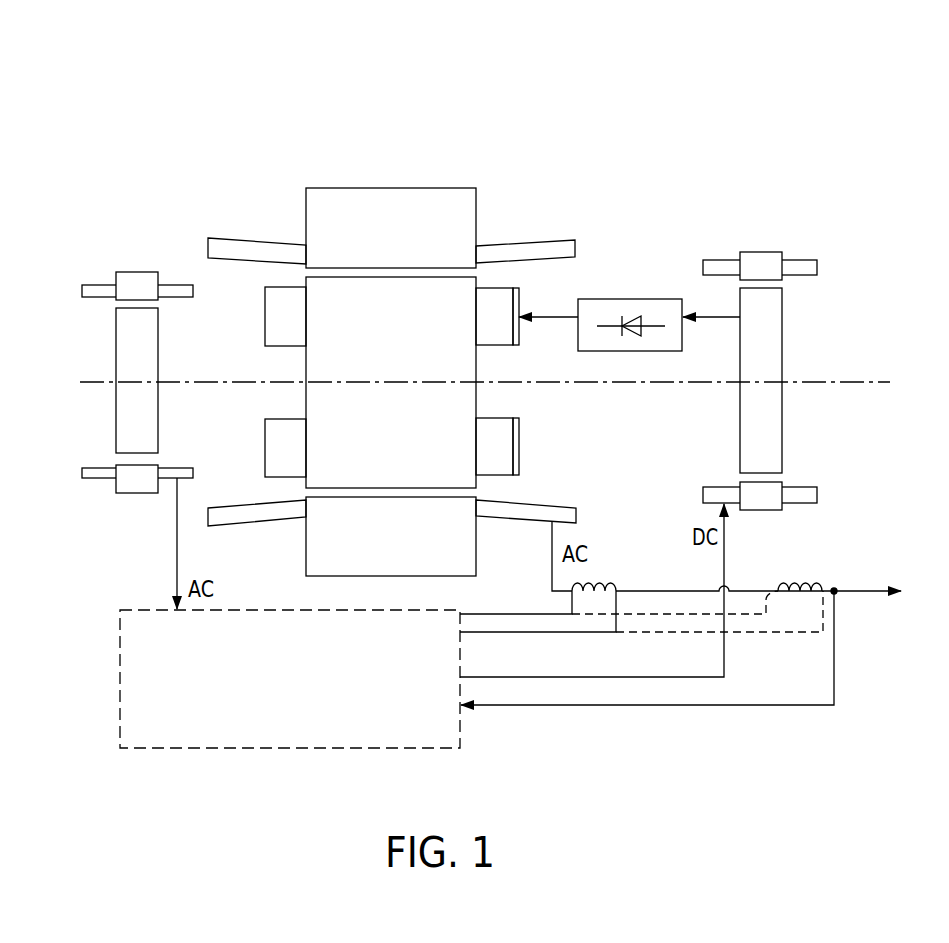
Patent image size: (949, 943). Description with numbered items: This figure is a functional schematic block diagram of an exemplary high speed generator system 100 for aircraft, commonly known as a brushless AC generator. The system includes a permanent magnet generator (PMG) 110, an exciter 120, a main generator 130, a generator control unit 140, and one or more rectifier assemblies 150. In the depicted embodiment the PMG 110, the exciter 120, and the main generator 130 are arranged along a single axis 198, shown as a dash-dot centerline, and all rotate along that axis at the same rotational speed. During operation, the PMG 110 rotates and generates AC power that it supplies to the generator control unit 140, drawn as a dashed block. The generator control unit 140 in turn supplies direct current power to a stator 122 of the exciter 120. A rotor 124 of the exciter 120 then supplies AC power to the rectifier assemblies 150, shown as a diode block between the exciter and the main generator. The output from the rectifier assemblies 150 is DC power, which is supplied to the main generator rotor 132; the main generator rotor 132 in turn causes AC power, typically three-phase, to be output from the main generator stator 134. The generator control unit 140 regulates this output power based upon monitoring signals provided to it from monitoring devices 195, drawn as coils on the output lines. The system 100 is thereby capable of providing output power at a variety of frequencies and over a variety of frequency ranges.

The high speed generator system 100 is at (655, 178).
The permanent magnet generator (PMG) 110 is at (133, 118).
The exciter 120 is at (792, 204).
The stator 122 is at (817, 496).
The rotor 124 is at (782, 317).
The main generator 130 is at (381, 140).
The main generator rotor 132 is at (477, 377).
The main generator stator 134 is at (478, 547).
The generator control unit 140 is at (128, 603).
The rectifier assemblies 150 is at (643, 351).
The monitoring devices 195 is at (570, 607).
The axis 198 is at (878, 381).